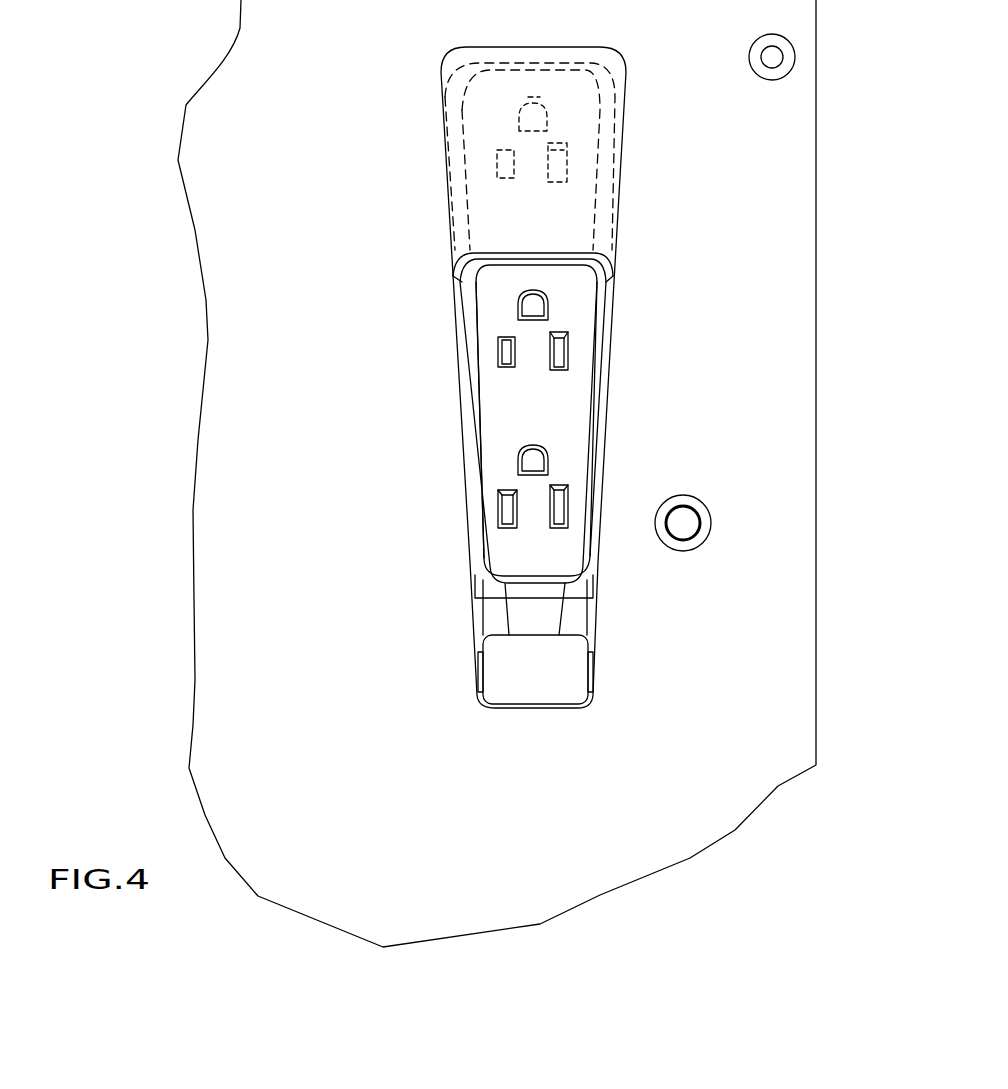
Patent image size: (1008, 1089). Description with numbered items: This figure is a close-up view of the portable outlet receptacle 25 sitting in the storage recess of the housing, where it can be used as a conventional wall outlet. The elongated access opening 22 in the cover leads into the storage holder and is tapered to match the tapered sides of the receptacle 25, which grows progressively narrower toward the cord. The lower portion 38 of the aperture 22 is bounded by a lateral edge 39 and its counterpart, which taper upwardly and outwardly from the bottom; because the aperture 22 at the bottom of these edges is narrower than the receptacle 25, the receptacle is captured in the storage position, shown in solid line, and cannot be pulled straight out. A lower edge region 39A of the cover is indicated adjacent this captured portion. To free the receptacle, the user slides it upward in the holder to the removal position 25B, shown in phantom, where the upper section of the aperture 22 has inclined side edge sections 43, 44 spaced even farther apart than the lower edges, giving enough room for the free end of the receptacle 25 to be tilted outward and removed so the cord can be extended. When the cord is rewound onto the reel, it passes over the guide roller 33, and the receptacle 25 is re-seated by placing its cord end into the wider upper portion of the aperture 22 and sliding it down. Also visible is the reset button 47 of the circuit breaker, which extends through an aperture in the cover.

The elongated opening 22 is at (608, 484).
The outlet receptacle 25 is at (558, 408).
The removal position of the outlet receptacle 25B is at (568, 205).
The guide roller 33 is at (538, 660).
The lower portion of the aperture 38 is at (634, 547).
The lateral edge 39 is at (464, 489).
The cover lower edge 39A is at (600, 548).
The inclined side edge section 43 is at (617, 231).
The inclined side edge section 44 is at (450, 258).
The reset button 47 is at (683, 523).